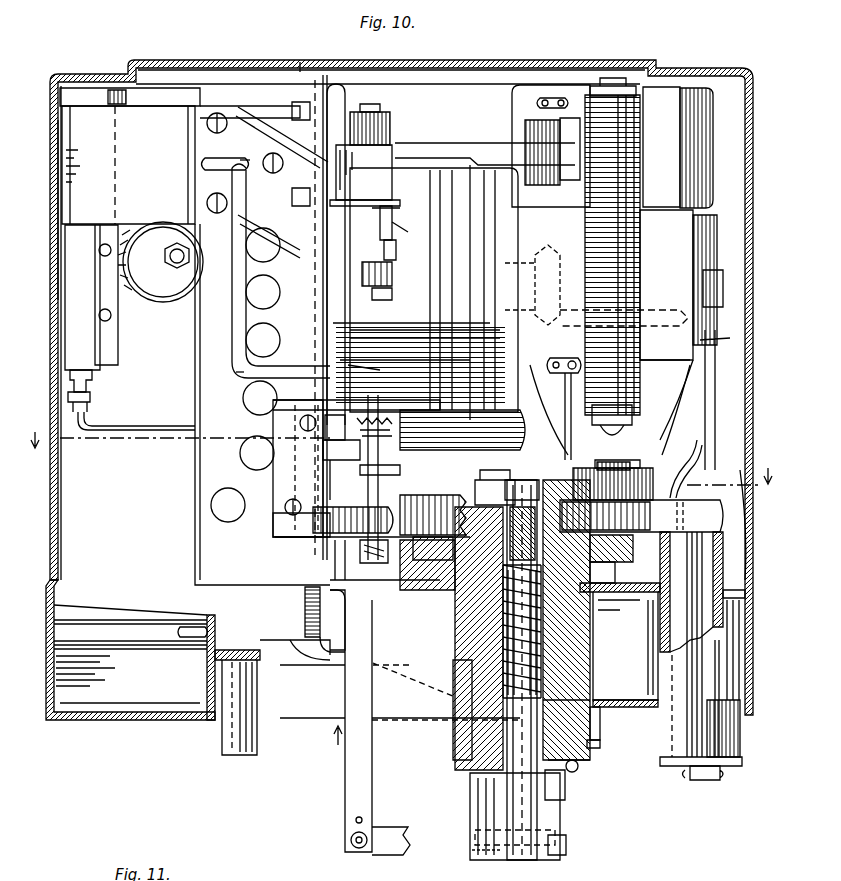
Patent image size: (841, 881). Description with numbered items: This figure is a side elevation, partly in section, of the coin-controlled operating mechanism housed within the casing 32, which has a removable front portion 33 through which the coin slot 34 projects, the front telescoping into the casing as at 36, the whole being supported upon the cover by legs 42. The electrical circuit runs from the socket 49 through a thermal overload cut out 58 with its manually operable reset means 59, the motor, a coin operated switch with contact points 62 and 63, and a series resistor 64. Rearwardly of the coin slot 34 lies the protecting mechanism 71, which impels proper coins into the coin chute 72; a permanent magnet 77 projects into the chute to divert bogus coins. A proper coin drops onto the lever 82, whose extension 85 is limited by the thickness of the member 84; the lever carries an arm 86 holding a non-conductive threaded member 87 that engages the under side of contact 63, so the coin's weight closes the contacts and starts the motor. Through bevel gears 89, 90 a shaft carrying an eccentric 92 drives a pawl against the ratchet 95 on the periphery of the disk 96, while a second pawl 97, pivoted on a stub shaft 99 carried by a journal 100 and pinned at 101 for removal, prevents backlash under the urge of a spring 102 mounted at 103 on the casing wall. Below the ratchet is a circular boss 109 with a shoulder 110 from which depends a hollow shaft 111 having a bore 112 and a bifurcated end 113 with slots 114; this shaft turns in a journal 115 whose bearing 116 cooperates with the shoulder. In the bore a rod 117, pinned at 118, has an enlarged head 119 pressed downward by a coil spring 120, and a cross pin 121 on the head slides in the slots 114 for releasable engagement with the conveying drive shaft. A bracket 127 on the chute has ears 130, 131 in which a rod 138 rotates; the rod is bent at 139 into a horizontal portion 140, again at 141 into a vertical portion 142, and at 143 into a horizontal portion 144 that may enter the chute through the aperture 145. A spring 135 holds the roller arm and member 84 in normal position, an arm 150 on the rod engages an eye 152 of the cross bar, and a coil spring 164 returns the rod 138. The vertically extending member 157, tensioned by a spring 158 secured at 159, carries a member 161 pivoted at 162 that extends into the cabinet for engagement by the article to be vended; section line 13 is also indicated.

The section line 13 is at (397, 449).
The casing 32 is at (553, 62).
The removable front portion 33 is at (190, 68).
The coin slot 34 is at (60, 162).
The telescoping joint 36 is at (306, 64).
The legs 42 is at (232, 756).
The socket 49 is at (430, 447).
The thermal overload cut out 58 is at (665, 102).
The manually operable reset means 59 is at (430, 148).
The contact point 62 is at (380, 210).
The contact point 63 is at (382, 232).
The series resistor 64 is at (586, 150).
The protecting mechanism 71 is at (130, 156).
The coin chute 72 is at (202, 350).
The permanent magnet 77 is at (165, 292).
The lever 82 is at (333, 322).
The member 84 is at (330, 445).
The extension 85 is at (340, 428).
The arm 86 is at (392, 278).
The threaded member 87 is at (392, 294).
The bevel gear 89 is at (550, 258).
The bevel gear 90 is at (664, 310).
The eccentric 92 is at (604, 462).
The ratchet 95 is at (440, 505).
The disk 96 is at (562, 498).
The second pawl 97 is at (697, 524).
The stub shaft 99 is at (700, 565).
The journal 100 is at (724, 590).
The pin 101 is at (718, 780).
The spring 102 is at (712, 468).
The spring mounting 103 is at (718, 336).
The circular boss 109 is at (424, 565).
The shoulder 110 is at (588, 576).
The shaft 111 is at (566, 670).
The bore 112 is at (540, 650).
The bifurcated end 113 is at (478, 798).
The slots 114 is at (472, 832).
The journal 115 is at (590, 746).
The bearing 116 is at (446, 595).
The rod 117 is at (556, 700).
The pin 118 is at (498, 480).
The enlarged head 119 is at (562, 806).
The coil spring 120 is at (505, 660).
The cross pin 121 is at (568, 842).
The bracket 127 is at (275, 482).
The ear 130 is at (280, 408).
The ear 131 is at (298, 540).
The spring 135 is at (386, 560).
The rod 138 is at (370, 500).
The bend point 139 is at (372, 378).
The horizontal portion 140 is at (348, 364).
The bend 141 is at (233, 380).
The vertical portion 142 is at (232, 268).
The bend 143 is at (272, 178).
The horizontal portion 144 is at (256, 152).
The aperture 145 is at (218, 160).
The arm 150 is at (275, 522).
The eye 152 is at (122, 702).
The vertically extending member 157 is at (346, 786).
The spring 158 is at (330, 592).
The spring attachment 159 is at (318, 650).
The member 161 is at (392, 846).
The pivot 162 is at (350, 840).
The coil spring 164 is at (386, 430).